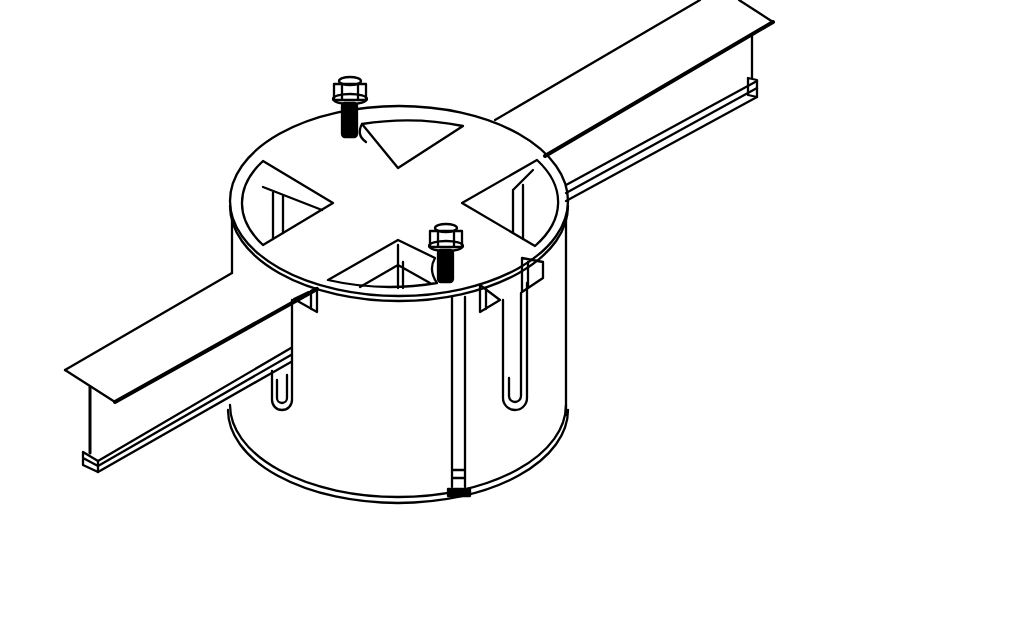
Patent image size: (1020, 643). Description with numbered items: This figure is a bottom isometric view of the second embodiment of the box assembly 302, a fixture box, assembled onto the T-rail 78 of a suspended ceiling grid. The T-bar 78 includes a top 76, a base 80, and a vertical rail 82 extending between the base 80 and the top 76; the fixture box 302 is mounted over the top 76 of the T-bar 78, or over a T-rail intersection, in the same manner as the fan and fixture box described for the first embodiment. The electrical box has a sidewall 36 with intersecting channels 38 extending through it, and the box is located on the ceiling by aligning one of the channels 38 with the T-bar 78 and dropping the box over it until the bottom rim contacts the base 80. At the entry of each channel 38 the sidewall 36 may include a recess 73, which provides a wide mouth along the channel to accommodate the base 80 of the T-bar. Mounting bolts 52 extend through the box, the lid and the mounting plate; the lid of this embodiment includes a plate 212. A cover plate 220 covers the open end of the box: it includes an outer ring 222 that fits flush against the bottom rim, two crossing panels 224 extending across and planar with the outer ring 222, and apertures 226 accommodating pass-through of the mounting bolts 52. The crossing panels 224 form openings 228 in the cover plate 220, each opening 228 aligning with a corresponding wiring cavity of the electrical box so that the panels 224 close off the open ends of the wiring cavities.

The box assembly 302 is at (172, 156).
The mounting bolts 52 is at (348, 74).
The apertures 226 is at (340, 130).
The cover plate 220 is at (483, 160).
The T-bar 78 is at (756, 53).
The panels 224 is at (353, 186).
The openings 228 is at (535, 217).
The recess 73 is at (537, 270).
The base 80 is at (145, 350).
The intersecting channels 38 is at (512, 340).
The vertical rail 82 is at (157, 423).
The sidewall 36 is at (394, 391).
The outer ring 222 is at (398, 296).
The top 76 is at (112, 457).
The plate 212 is at (503, 477).